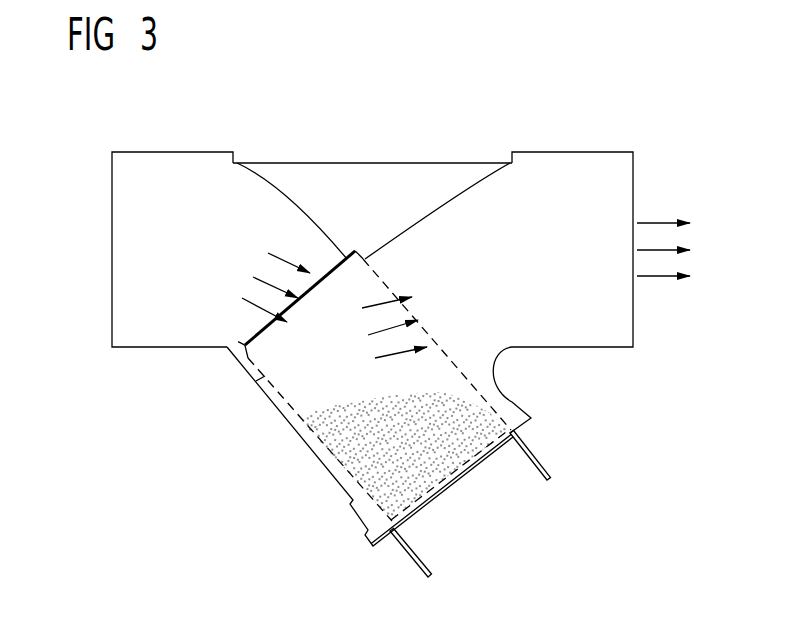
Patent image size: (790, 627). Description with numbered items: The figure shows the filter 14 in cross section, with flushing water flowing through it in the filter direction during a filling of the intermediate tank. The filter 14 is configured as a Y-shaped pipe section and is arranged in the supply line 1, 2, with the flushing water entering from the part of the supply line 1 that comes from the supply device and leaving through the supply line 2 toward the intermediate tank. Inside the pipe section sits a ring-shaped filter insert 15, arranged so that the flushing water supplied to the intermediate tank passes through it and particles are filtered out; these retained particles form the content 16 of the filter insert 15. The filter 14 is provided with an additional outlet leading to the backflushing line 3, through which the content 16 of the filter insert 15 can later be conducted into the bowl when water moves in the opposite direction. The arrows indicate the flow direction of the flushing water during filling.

The supply line 1 is at (112, 177).
The supply line 2 is at (635, 177).
The backflushing line 3 is at (400, 548).
The filter 14 is at (367, 163).
The filter insert 15 is at (266, 392).
The content of the filter insert 16 is at (450, 480).